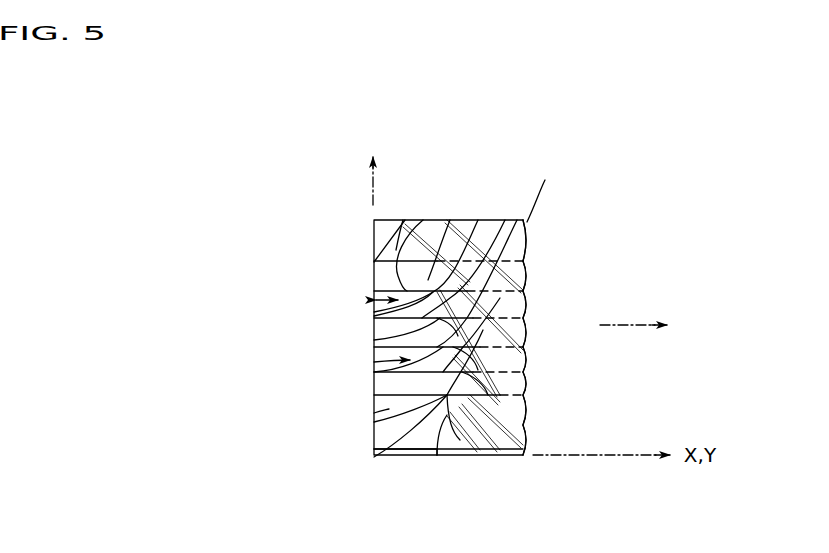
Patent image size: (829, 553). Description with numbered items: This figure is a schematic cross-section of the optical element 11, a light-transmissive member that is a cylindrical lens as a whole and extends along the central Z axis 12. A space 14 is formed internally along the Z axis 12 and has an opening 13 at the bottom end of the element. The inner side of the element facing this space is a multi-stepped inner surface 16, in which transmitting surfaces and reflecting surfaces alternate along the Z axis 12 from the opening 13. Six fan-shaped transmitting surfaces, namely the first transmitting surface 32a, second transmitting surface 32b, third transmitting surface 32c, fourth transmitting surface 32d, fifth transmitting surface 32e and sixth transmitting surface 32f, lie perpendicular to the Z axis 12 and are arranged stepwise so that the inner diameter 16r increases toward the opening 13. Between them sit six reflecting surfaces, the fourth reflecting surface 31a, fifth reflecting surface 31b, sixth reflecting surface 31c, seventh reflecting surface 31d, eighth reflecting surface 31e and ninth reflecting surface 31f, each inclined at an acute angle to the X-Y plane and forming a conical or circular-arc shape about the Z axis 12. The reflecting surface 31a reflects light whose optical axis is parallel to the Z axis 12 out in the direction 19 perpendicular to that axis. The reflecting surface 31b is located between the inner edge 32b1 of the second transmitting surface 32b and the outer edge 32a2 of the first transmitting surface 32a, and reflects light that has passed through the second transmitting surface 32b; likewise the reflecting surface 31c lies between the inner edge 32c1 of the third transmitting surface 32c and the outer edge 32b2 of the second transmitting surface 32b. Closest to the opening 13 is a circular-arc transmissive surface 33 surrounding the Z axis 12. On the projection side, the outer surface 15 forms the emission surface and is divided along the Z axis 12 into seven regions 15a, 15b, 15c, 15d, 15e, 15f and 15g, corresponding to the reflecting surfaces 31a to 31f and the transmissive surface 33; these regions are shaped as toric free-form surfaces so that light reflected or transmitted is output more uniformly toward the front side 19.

The optical element 11 is at (553, 229).
The Z axis 12 is at (370, 183).
The opening 13 is at (402, 456).
The space 14 is at (374, 413).
The outer surface 15 is at (530, 290).
The region of outer surface 15a is at (527, 230).
The region of outer surface 15b is at (527, 277).
The region of outer surface 15c is at (527, 308).
The region of outer surface 15d is at (527, 332).
The region of outer surface 15e is at (527, 352).
The region of outer surface 15f is at (527, 383).
The region of outer surface 15g is at (527, 425).
The inner surface 16 is at (374, 362).
The inner diameter 16r is at (372, 307).
The front side 19 is at (637, 318).
The fourth reflecting surface 31a is at (423, 220).
The fifth reflecting surface 31b is at (476, 220).
The sixth reflecting surface 31c is at (527, 222).
The seventh reflecting surface 31d is at (527, 327).
The eighth reflecting surface 31e is at (527, 363).
The ninth reflecting surface 31f is at (527, 410).
The first transmitting surface 32a is at (374, 266).
The outer edge of first transmitting surface 32a2 is at (450, 220).
The second transmitting surface 32b is at (374, 315).
The inner edge of second transmitting surface 32b1 is at (403, 220).
The outer edge of second transmitting surface 32b2 is at (517, 220).
The third transmitting surface 32c is at (374, 340).
The inner edge of third transmitting surface 32c1 is at (504, 220).
The fourth transmitting surface 32d is at (374, 375).
The fifth transmitting surface 32e is at (374, 422).
The sixth transmitting surface 32f is at (374, 457).
The transmissive surface 33 is at (460, 440).